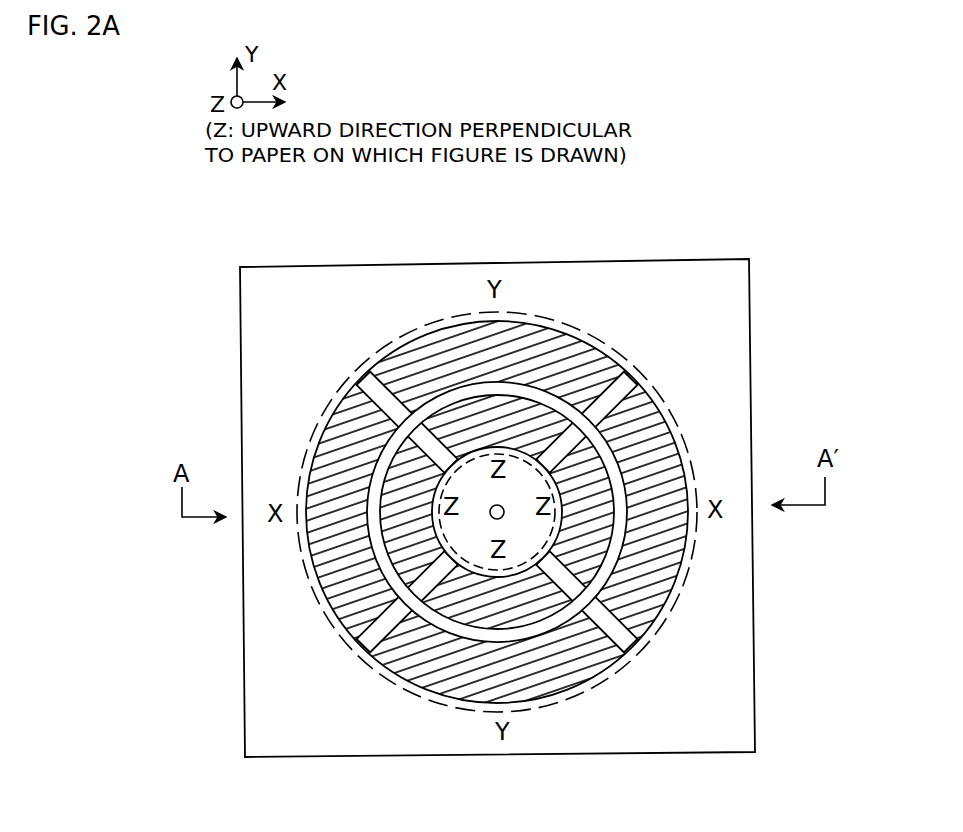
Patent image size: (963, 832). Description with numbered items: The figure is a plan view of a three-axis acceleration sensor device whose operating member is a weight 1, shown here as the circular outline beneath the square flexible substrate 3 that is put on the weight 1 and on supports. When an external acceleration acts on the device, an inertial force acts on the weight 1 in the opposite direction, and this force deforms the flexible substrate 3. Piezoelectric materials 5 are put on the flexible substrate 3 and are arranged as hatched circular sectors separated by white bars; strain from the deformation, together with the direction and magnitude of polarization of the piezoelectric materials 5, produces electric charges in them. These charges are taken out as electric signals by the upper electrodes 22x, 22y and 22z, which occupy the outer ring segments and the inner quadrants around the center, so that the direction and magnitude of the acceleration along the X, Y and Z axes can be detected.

The weight 1 is at (680, 577).
The flexible substrate 3 is at (437, 512).
The piezoelectric materials 5 is at (373, 637).
The upper electrode 22x is at (668, 437).
The upper electrode 22y is at (453, 333).
The upper electrode 22z is at (425, 458).